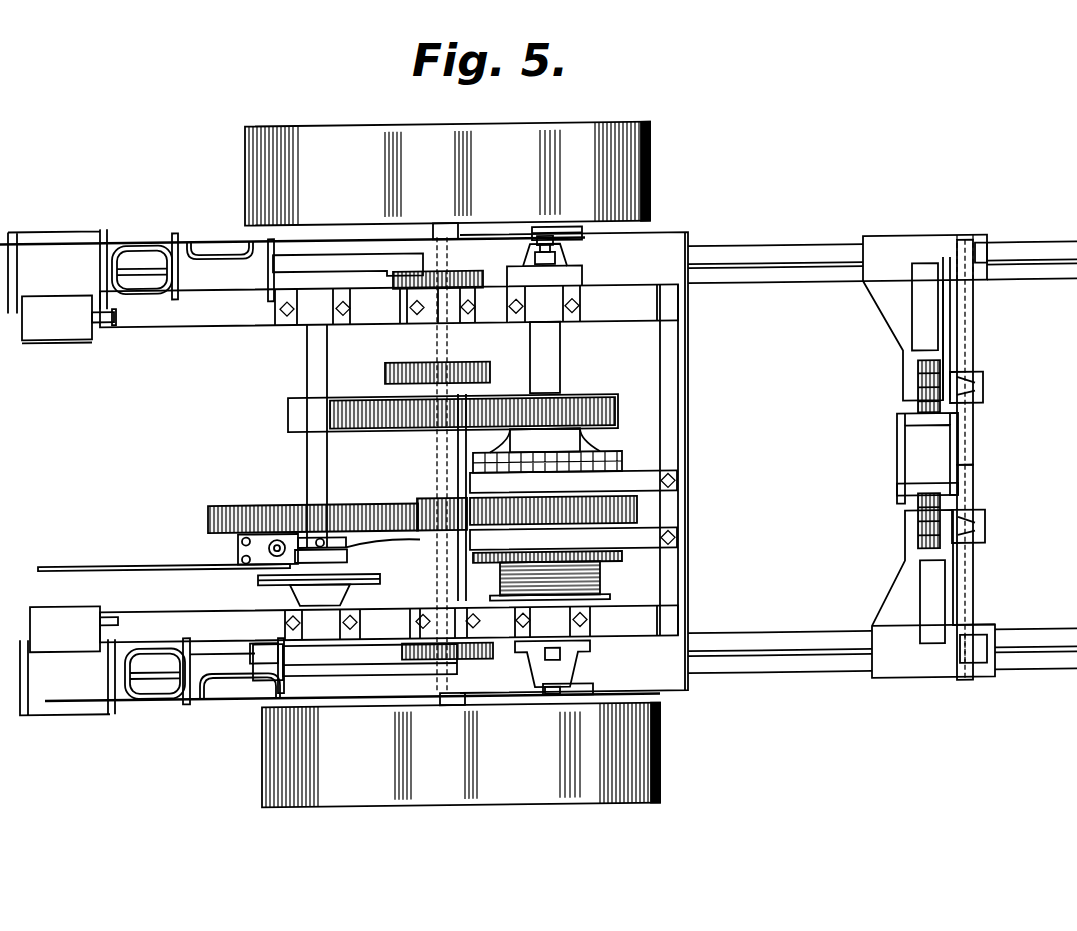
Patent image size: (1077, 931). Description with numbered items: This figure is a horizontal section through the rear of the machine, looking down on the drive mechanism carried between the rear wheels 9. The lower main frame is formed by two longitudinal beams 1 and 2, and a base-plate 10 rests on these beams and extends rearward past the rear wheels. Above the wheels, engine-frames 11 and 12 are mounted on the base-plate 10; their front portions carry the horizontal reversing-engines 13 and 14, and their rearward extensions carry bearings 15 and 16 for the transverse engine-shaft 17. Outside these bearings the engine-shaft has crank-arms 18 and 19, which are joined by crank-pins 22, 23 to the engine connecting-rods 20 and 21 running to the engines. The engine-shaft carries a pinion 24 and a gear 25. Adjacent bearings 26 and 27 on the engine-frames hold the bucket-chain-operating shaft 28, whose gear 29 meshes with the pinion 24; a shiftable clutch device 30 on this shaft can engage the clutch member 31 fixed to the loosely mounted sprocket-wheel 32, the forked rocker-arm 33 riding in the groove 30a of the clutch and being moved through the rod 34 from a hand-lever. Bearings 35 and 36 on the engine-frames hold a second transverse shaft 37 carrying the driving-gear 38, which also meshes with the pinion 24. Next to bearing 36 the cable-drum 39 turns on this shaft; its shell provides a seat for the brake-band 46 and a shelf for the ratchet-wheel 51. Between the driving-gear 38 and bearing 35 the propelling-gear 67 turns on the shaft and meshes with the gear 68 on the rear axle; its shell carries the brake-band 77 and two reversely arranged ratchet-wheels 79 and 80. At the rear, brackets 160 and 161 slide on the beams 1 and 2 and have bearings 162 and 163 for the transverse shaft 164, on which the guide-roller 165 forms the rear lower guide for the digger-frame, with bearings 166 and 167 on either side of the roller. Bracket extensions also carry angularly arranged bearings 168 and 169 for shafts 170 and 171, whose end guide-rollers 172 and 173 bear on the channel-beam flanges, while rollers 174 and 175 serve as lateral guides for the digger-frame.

The longitudinal beam 1 is at (780, 640).
The longitudinal beam 2 is at (758, 278).
The wheel 9 is at (430, 126).
The base-plate 10 is at (680, 228).
The engine-frame 11 is at (216, 318).
The engine-frame 12 is at (185, 608).
The reversing-engine 13 is at (190, 238).
The reversing-engine 14 is at (235, 682).
The bearing 15 is at (462, 326).
The bearing 16 is at (438, 615).
The engine-shaft 17 is at (437, 450).
The crank-arm 18 is at (455, 270).
The crank-arm 19 is at (470, 656).
The engine connecting-rod 20 is at (326, 266).
The engine connecting-rod 21 is at (355, 668).
The crank-pin 22 is at (395, 278).
The crank-pin 23 is at (440, 660).
The pinion 24 is at (430, 508).
The gear 25 is at (415, 362).
The bearing 26 is at (297, 318).
The bearing 27 is at (308, 620).
The bucket-chain-operating shaft 28 is at (308, 455).
The gear 29 is at (340, 502).
The shiftable clutch device 30 is at (345, 540).
The groove 30a is at (363, 543).
The clutch member 31 is at (348, 560).
The sprocket-wheel 32 is at (348, 588).
The forked rocker-arm 33 is at (296, 504).
The rod 34 is at (145, 561).
The bearing 35 is at (560, 325).
The bearing 36 is at (585, 630).
The shaft 37 is at (560, 352).
The driving-gear 38 is at (585, 511).
The cable-drum 39 is at (600, 574).
The brake-band 46 is at (632, 542).
The ratchet-wheel 51 is at (490, 558).
The propelling-gear 67 is at (598, 408).
The gear 68 is at (372, 410).
The brake-band 77 is at (628, 482).
The ratchet-wheel 79 is at (606, 462).
The ratchet-wheel 80 is at (598, 442).
The bracket 160 is at (888, 283).
The bracket 161 is at (895, 668).
The bearing 162 is at (985, 282).
The bearing 163 is at (990, 668).
The shaft 164 is at (975, 350).
The guide-roller 165 is at (975, 450).
The bearing 166 is at (985, 393).
The bearing 167 is at (985, 530).
The bearing 168 is at (978, 398).
The bearing 169 is at (980, 525).
The shaft 170 is at (978, 388).
The shaft 171 is at (980, 538).
The guide-roller 172 is at (915, 432).
The guide-roller 173 is at (915, 480).
The roller 174 is at (918, 398).
The roller 175 is at (920, 520).